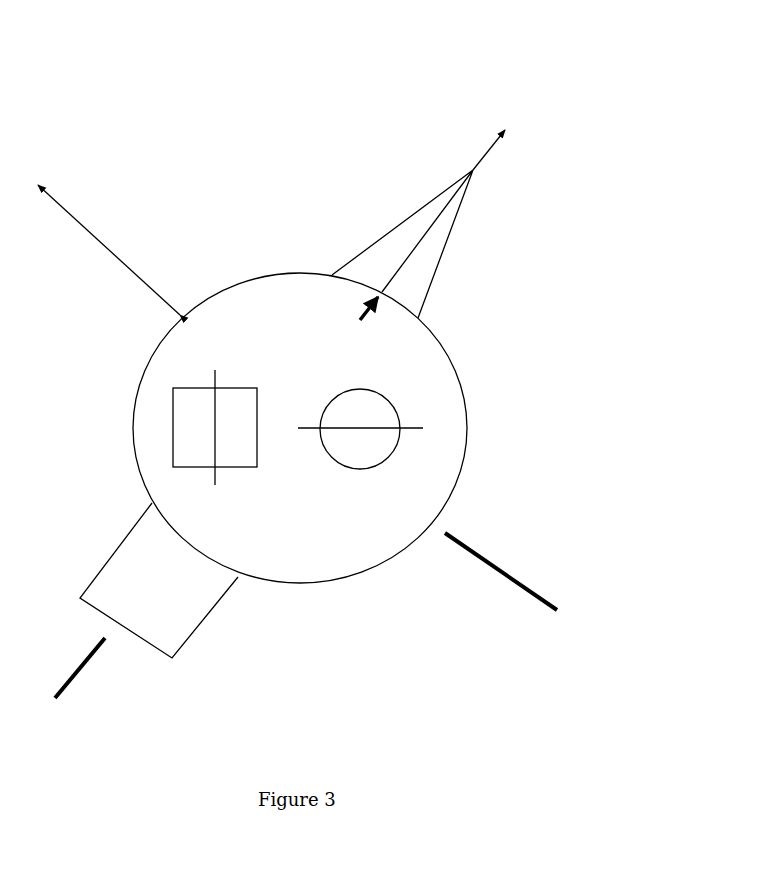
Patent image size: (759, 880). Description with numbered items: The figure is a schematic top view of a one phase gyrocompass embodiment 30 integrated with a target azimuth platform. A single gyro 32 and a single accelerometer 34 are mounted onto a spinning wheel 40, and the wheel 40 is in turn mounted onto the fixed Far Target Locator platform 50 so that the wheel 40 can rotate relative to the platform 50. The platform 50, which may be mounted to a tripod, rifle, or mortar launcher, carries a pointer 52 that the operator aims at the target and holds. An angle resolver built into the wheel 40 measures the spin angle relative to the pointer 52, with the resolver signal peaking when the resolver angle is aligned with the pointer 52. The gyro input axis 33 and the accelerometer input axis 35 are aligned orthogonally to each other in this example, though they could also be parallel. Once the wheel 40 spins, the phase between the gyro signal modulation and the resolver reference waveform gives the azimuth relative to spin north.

The One Phase Gyrocompass embodiment 30 is at (628, 57).
The gyro 32 is at (360, 388).
The gyro Input Axis 33 is at (408, 432).
The accelerometer 34 is at (257, 455).
The accelerometer Input Axis 35 is at (220, 378).
The spinning wheel 40 is at (317, 585).
The Far Target Locator platform 50 is at (203, 620).
The pointer 52 is at (373, 243).